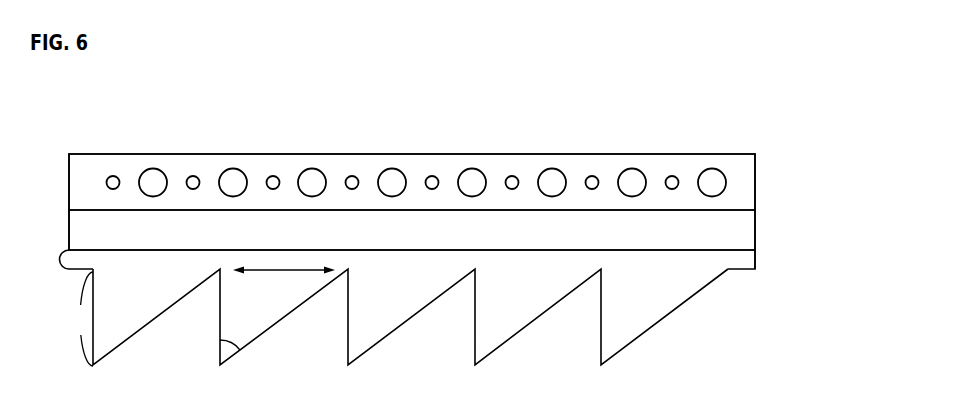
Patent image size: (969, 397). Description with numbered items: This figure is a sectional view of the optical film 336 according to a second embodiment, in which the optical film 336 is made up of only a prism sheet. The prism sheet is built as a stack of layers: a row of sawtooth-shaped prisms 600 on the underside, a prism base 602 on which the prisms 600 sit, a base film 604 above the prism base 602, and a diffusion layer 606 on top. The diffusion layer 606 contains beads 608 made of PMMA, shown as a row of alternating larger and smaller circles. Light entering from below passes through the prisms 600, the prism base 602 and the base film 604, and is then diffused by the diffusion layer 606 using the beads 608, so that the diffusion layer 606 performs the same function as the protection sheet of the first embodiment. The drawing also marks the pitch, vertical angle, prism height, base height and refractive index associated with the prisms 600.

The optical film 336 is at (753, 135).
The prisms 600 is at (660, 307).
The prism base 602 is at (746, 262).
The base film 604 is at (746, 223).
The diffusion layer 606 is at (472, 158).
The beads 608 is at (311, 174).